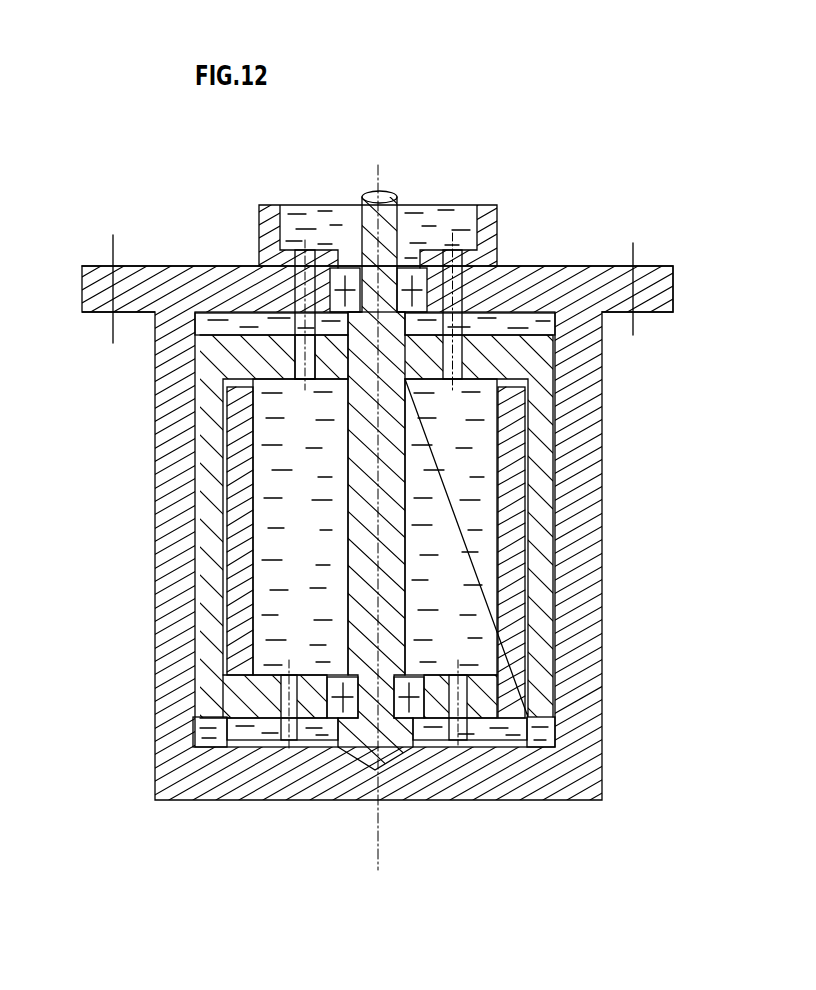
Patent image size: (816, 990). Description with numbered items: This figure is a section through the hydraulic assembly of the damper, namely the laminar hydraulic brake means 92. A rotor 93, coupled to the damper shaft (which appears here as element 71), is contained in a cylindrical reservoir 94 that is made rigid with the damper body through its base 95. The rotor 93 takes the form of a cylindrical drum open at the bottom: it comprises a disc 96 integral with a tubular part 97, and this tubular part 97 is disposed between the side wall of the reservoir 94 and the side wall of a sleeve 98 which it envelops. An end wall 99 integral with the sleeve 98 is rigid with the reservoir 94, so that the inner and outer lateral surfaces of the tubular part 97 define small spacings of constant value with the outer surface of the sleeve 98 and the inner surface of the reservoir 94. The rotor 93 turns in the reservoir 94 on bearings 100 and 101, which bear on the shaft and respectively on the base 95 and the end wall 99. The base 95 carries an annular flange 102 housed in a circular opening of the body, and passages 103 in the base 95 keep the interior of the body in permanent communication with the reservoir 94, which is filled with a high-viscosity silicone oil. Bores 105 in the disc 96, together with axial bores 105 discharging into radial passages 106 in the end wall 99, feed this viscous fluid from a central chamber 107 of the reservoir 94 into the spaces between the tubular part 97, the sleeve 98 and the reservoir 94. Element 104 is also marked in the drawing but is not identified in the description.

The shaft 71 is at (388, 233).
The laminar hydraulic brake means 92 is at (617, 633).
The rotor 93 is at (402, 362).
The cylindrical reservoir 94 is at (582, 417).
The base 95 is at (592, 290).
The disc 96 is at (517, 357).
The tubular part 97 is at (538, 513).
The sleeve 98 is at (515, 553).
The end wall 99 is at (437, 700).
The bearing 100 is at (357, 280).
The bearing 101 is at (347, 712).
The annular flange 102 is at (260, 225).
The passages 103 is at (303, 262).
The bolt lower end 104 is at (298, 372).
The bores 105 is at (288, 712).
The radial passages 106 is at (502, 735).
The central chamber 107 is at (312, 546).